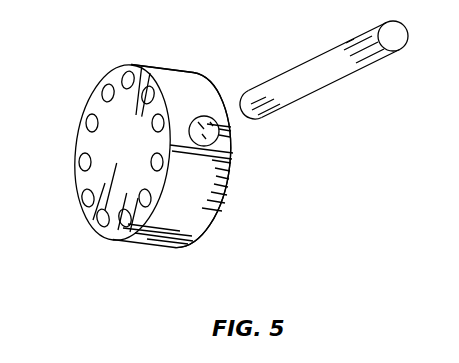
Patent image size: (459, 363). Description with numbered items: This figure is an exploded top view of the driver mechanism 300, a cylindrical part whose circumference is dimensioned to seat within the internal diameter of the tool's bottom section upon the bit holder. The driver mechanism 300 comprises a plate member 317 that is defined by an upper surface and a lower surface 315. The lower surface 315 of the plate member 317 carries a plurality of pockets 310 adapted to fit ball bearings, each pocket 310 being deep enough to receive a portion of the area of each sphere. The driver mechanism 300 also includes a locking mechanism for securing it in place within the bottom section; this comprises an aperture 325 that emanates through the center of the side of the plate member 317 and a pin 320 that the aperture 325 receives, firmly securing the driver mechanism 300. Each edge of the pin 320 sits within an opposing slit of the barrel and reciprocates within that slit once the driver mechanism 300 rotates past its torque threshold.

The driver mechanism 300 is at (110, 58).
The pocket 310 is at (84, 196).
The lower surface 315 is at (122, 118).
The plate member 317 is at (187, 78).
The pin 320 is at (360, 66).
The aperture 325 is at (218, 138).